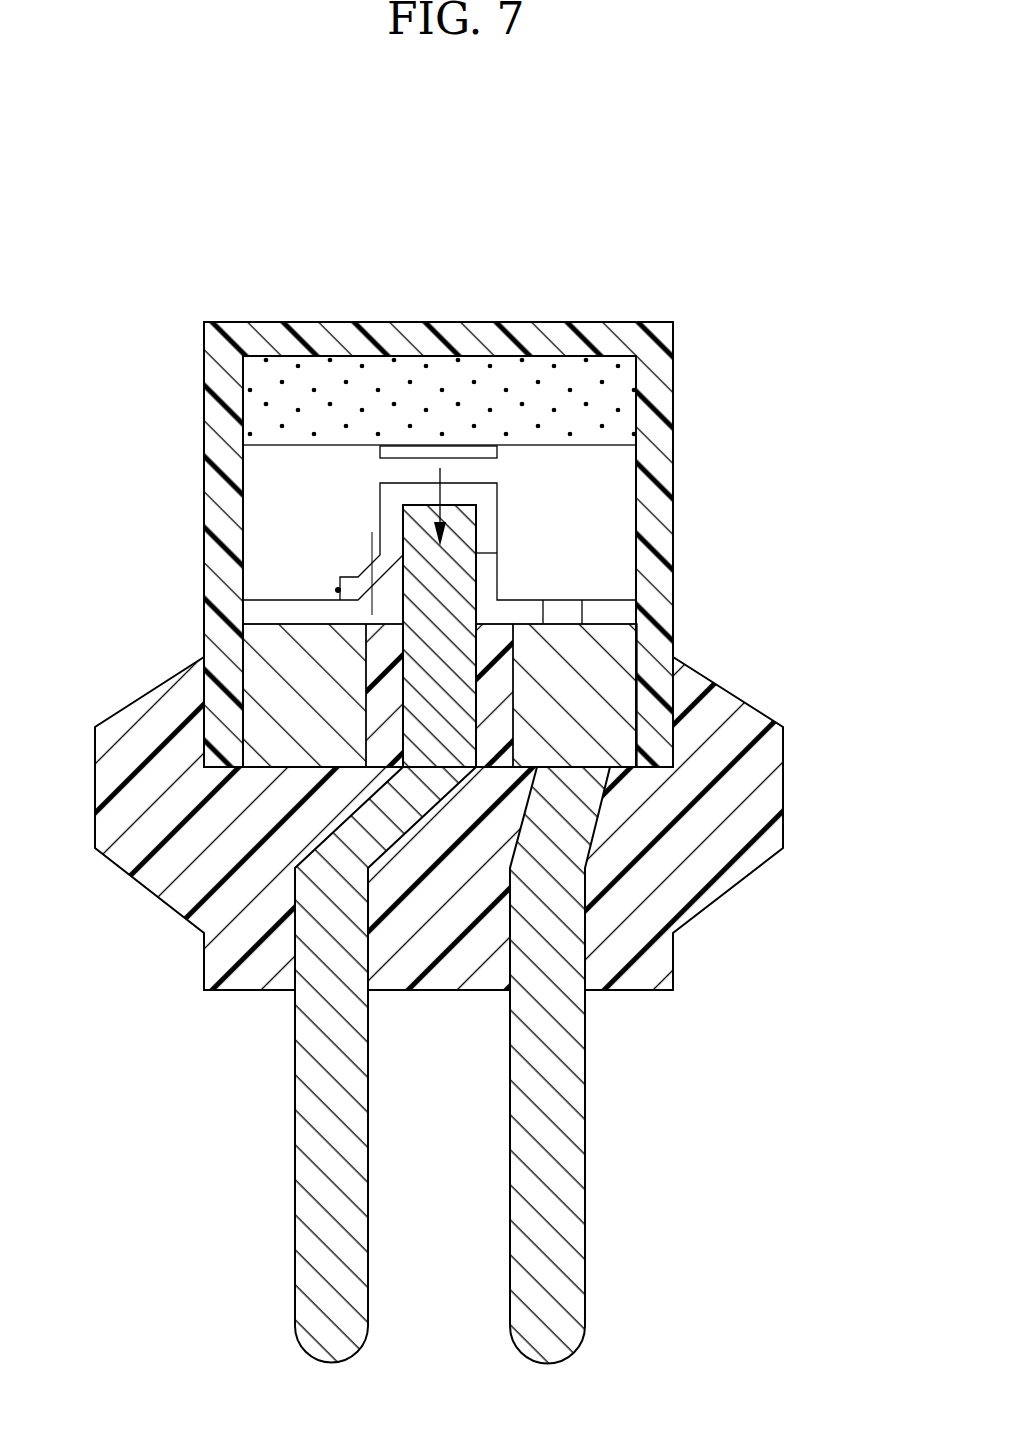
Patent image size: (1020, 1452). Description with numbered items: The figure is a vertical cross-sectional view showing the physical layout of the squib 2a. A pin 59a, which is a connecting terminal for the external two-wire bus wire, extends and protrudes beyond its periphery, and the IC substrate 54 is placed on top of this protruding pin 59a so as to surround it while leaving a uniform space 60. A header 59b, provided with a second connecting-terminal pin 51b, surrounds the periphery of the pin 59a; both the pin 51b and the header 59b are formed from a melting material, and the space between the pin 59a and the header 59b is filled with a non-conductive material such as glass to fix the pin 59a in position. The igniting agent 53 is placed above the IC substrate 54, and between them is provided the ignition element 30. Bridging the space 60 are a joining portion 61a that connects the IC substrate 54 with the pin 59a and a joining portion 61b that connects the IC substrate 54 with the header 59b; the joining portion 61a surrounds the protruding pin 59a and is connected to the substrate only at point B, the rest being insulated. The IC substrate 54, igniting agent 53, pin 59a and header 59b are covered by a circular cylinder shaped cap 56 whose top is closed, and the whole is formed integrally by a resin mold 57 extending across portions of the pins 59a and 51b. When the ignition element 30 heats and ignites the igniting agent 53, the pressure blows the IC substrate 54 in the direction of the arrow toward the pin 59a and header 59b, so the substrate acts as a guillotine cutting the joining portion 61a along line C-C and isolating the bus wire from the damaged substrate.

The squib 2a is at (591, 212).
The cap 56 is at (228, 368).
The igniting agent 53 is at (262, 420).
The IC substrate 54 is at (615, 458).
The ignition element 30 is at (497, 450).
The joining portion 61a is at (392, 502).
The space 60 is at (278, 612).
The joining portion 61b is at (562, 606).
The header 59b is at (280, 643).
The resin mold 57 is at (188, 887).
The pin 59a is at (330, 1207).
The pin 51b is at (562, 1212).